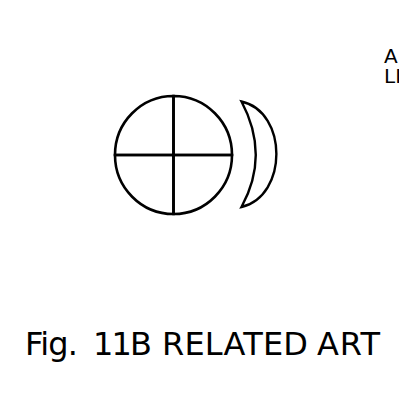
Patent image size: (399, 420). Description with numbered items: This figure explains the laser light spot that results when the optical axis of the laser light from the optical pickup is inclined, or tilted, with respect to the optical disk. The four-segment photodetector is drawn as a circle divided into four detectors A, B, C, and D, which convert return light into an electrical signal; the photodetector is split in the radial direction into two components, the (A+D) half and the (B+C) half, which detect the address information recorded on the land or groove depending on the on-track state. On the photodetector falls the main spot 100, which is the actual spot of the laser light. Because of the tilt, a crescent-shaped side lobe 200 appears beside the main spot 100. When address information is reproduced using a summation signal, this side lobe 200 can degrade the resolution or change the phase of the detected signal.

The main spot 100 is at (173, 117).
The side lobe 200 is at (259, 109).
The detector A is at (203, 125).
The detector B is at (203, 184).
The detector C is at (144, 184).
The detector D is at (144, 125).